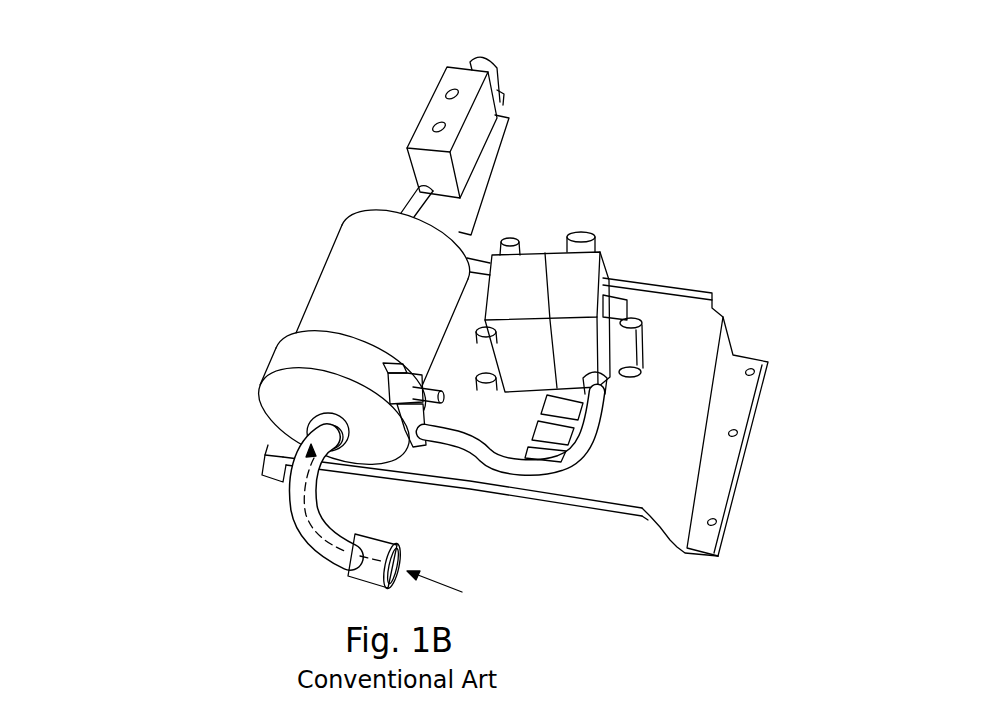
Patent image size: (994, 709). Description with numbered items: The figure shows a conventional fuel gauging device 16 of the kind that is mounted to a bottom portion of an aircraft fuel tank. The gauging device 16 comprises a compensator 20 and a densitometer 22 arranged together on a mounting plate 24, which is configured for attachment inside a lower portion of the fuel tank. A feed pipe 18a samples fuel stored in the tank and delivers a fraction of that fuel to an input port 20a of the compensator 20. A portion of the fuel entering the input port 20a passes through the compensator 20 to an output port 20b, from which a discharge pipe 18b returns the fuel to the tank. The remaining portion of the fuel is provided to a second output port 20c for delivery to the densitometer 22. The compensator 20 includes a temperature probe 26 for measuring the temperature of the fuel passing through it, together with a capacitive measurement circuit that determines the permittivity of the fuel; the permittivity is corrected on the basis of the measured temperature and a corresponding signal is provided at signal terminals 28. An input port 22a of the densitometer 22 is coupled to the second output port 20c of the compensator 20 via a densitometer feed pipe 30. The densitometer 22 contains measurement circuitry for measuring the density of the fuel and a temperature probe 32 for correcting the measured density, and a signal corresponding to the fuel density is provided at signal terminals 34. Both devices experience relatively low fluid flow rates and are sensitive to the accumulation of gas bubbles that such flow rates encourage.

The gauging device 16 is at (154, 139).
The feed pipe 18a is at (290, 497).
The discharge pipe 18b is at (493, 60).
The compensator 20 is at (355, 229).
The input port 20a is at (273, 438).
The output port 20b is at (412, 199).
The second output port 20c is at (417, 440).
The densitometer 22 is at (578, 270).
The input port 22a is at (607, 378).
The mounting plate 24 is at (683, 352).
The temperature probe 26 is at (405, 385).
The signal terminals 28 is at (427, 92).
The densitometer feed pipe 30 is at (587, 438).
The temperature probe 32 is at (627, 308).
The signal terminals 34 is at (512, 247).